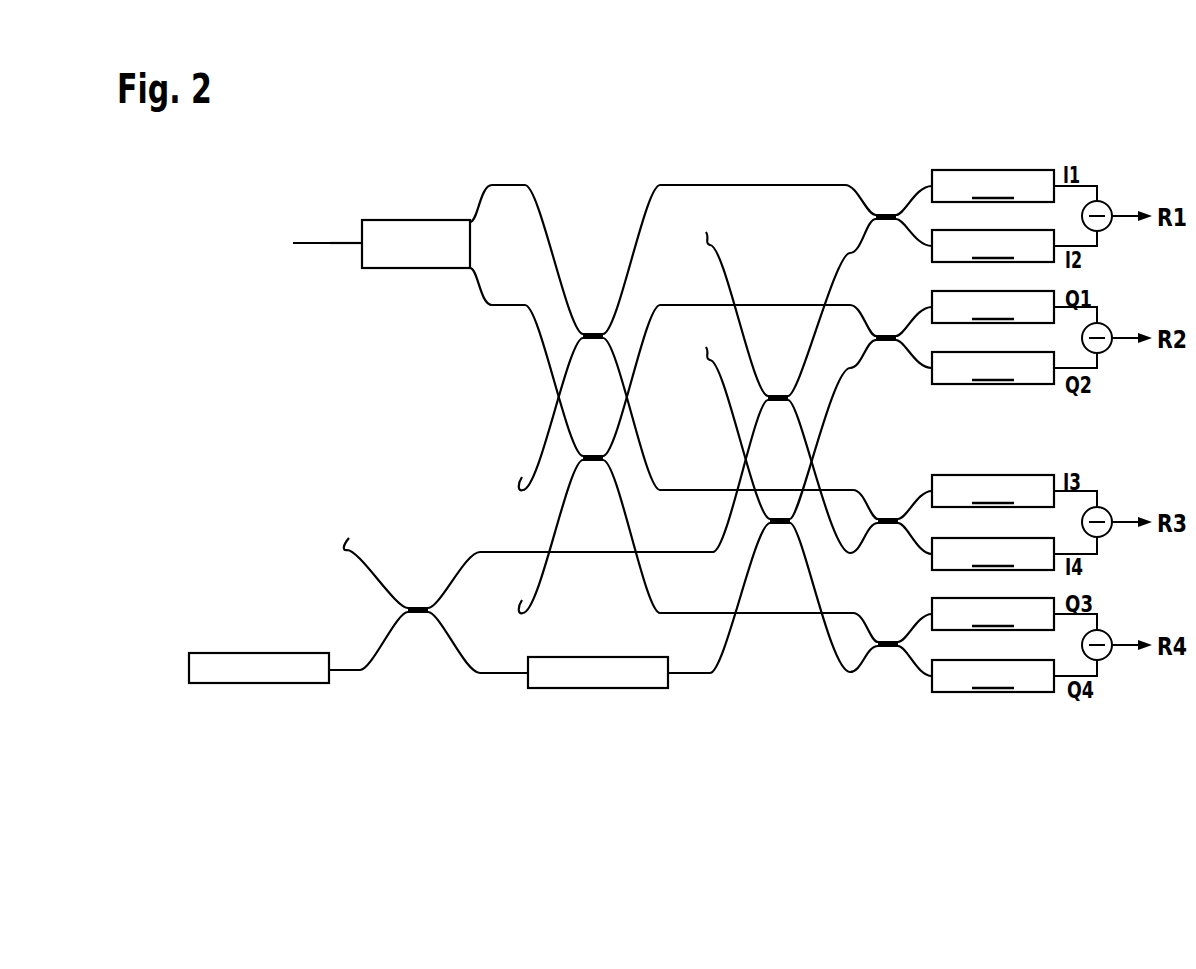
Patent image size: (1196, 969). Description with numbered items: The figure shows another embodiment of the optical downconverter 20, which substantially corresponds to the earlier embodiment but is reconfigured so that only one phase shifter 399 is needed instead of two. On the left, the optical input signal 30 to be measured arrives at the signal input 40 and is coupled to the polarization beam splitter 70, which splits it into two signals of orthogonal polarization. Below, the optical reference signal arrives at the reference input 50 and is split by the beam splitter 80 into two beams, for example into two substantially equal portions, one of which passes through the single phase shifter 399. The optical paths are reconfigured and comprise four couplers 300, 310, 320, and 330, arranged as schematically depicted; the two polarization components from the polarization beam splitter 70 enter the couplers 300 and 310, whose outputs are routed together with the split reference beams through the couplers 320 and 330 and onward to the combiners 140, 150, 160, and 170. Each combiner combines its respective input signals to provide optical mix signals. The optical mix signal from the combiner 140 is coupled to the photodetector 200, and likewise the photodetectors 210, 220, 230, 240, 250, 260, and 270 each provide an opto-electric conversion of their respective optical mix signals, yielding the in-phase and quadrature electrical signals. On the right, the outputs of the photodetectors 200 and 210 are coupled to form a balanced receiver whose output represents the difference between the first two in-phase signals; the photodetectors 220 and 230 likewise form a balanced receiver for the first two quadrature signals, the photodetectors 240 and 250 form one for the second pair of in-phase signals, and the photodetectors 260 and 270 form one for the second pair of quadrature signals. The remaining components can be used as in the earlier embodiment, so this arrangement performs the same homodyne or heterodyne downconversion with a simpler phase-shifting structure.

The optical downconverter 20 is at (427, 146).
The optical input signal 30 is at (296, 243).
The signal input 40 is at (333, 243).
The reference input 50 is at (366, 671).
The polarization beam splitter 70 is at (405, 253).
The beam splitter 80 is at (421, 574).
The combiner 140 is at (885, 198).
The combiner 150 is at (887, 318).
The combiner 160 is at (888, 500).
The combiner 170 is at (888, 622).
The photodetector 200 is at (993, 186).
The photodetector 210 is at (993, 246).
The photodetector 220 is at (993, 307).
The photodetector 230 is at (993, 368).
The photodetector 240 is at (993, 491).
The photodetector 250 is at (993, 554).
The photodetector 260 is at (993, 614).
The photodetector 270 is at (993, 676).
The coupler 300 is at (596, 308).
The coupler 310 is at (591, 500).
The coupler 320 is at (779, 372).
The coupler 330 is at (780, 552).
The phase shifter 399 is at (600, 690).